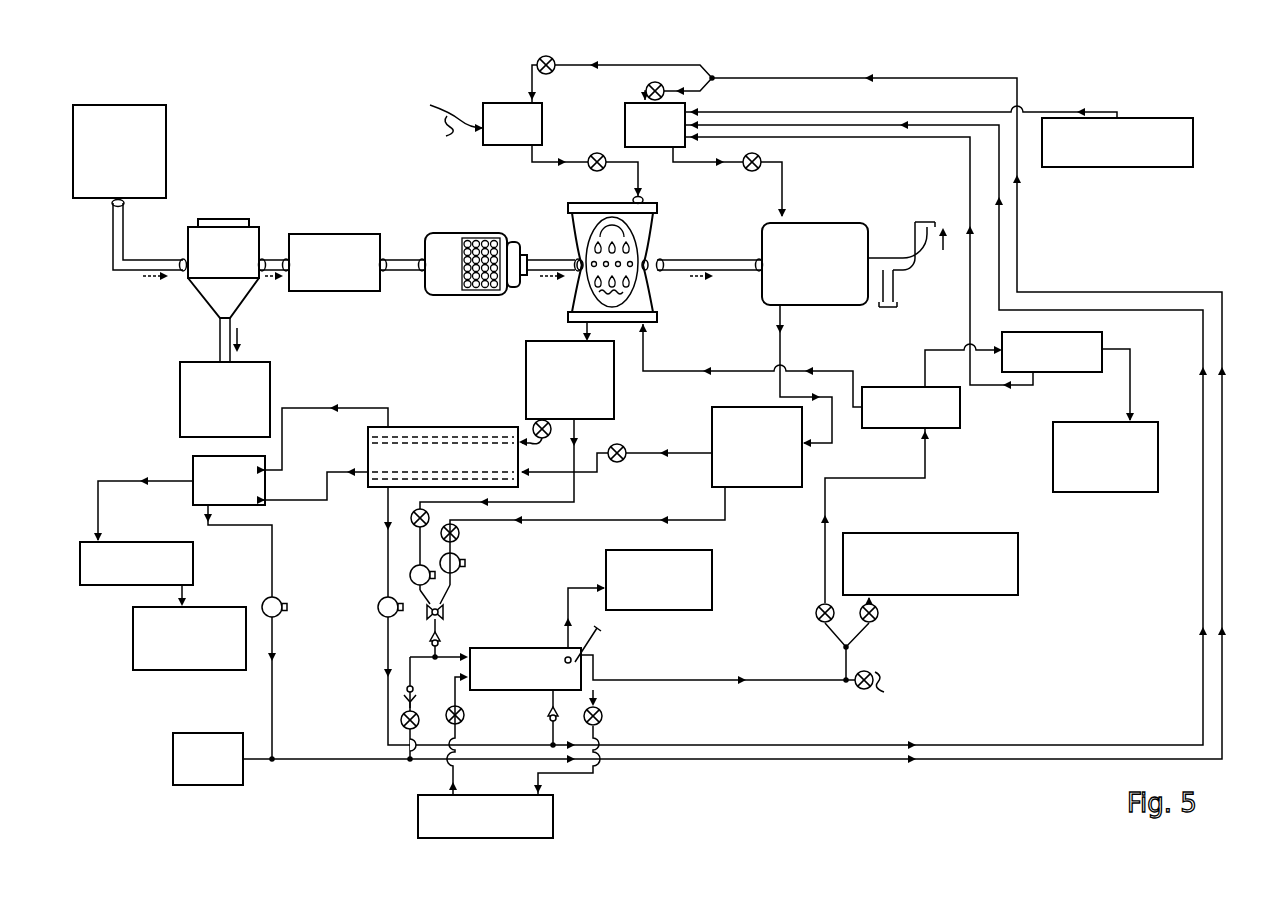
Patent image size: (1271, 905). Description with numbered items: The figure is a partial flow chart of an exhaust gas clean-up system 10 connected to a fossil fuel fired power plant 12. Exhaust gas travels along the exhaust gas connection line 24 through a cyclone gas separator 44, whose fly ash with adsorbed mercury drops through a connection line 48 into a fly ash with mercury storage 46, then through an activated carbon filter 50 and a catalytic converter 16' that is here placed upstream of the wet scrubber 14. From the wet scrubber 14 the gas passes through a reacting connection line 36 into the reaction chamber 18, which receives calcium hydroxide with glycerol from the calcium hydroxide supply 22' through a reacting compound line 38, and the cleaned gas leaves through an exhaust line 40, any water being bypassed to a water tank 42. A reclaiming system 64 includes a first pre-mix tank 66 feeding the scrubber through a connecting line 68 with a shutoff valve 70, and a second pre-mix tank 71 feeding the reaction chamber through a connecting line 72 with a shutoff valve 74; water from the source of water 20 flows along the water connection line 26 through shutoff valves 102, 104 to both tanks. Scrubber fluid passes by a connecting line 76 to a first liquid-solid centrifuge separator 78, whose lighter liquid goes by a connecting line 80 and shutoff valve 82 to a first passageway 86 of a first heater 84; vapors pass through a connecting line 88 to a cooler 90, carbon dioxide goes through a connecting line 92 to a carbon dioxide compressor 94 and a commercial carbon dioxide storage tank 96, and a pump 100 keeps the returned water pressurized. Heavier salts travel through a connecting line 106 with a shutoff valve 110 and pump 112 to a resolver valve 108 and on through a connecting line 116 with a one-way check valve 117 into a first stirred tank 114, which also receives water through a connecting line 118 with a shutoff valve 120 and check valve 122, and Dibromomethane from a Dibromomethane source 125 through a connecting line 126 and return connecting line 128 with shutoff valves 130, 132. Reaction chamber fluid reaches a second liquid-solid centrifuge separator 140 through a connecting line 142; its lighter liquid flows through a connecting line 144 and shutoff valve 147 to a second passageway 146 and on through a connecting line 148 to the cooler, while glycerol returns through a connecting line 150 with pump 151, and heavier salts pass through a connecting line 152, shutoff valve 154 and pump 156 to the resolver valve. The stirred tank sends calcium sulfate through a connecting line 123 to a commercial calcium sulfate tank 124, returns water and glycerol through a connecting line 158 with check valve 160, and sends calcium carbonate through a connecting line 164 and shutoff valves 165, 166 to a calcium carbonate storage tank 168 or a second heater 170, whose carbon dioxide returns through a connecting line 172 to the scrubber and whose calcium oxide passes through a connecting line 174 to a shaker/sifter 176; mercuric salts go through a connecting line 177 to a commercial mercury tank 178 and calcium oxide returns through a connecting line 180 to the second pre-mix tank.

The exhaust gas clean-up system 10 is at (305, 74).
The fossil fuel fired power plant 12 is at (158, 103).
The wet scrubber 14 is at (585, 203).
The catalytic converter 16' is at (476, 237).
The reaction chamber 18 is at (818, 223).
The source of water 20 is at (213, 733).
The calcium hydroxide supply 22' is at (1117, 156).
The exhaust gas connection line 24 is at (165, 258).
The water connection line 26 is at (750, 78).
The reacting connection line 36 is at (714, 258).
The reacting compound line 38 is at (822, 112).
The exhaust line 40 is at (916, 242).
The water tank 42 is at (897, 285).
The cyclone gas separator 44 is at (238, 219).
The fly ash with mercury storage 46 is at (180, 392).
The connection line 48 is at (220, 342).
The activated carbon filter 50 is at (330, 291).
The reclaiming system 64 is at (358, 133).
The first pre-mix tank 66 is at (485, 103).
The connecting line 68 is at (532, 158).
The remotely controlled shutoff valve 70 is at (592, 153).
The second pre-mix tank 71 is at (625, 112).
The connecting line 72 is at (700, 164).
The remotely controlled shutoff valve 74 is at (746, 170).
The connecting line 76 is at (580, 332).
The first liquid-solid centrifuge separator 78 is at (526, 370).
The connecting line 80 is at (535, 440).
The remotely controlled shutoff valve 82 is at (536, 422).
The first heater 84 is at (485, 427).
The first passageway 86 is at (455, 437).
The connecting line 88 is at (380, 408).
The cooler 90 is at (193, 462).
The connecting line 92 is at (98, 495).
The carbon dioxide compressor 94 is at (133, 542).
The commercial carbon dioxide storage tank 96 is at (272, 542).
The remotely controlled pump 100 is at (262, 600).
The remotely controlled shutoff valve 102 is at (540, 58).
The remotely controlled shutoff valve 104 is at (657, 82).
The connecting line 106 is at (578, 492).
The resolver valve 108 is at (448, 608).
The remotely controlled shutoff valve 110 is at (414, 526).
The remotely controlled pump 112 is at (410, 582).
The first stirred tank 114 is at (538, 690).
The connecting line 116 is at (442, 656).
The one-way check valve 117 is at (430, 628).
The connecting line 118 is at (410, 658).
The remotely controlled shutoff valve 120 is at (402, 726).
The one-way check valve 122 is at (404, 700).
The connecting line 123 is at (568, 598).
The commercial calcium sulfate tank 124 is at (606, 568).
The Dibromomethane source 125 is at (553, 814).
The connecting line 126 is at (446, 787).
The return connecting line 128 is at (580, 778).
The remotely controlled shutoff valve 130 is at (466, 720).
The remotely controlled shutoff valve 132 is at (604, 718).
The second liquid-solid centrifuge separator 140 is at (712, 416).
The connecting line 142 is at (780, 345).
The connecting line 144 is at (626, 452).
The second passageway 146 is at (372, 464).
The remotely controlled shutoff valve 147 is at (624, 462).
The connecting line 148 is at (327, 494).
The connecting line 150 is at (388, 508).
The remotely controlled pump 151 is at (378, 607).
The connecting line 152 is at (530, 520).
The remotely controlled shutoff valve 154 is at (458, 540).
The remotely controlled pump 156 is at (460, 572).
The connecting line 158 is at (560, 702).
The one-way check valve 160 is at (560, 730).
The connecting line 164 is at (876, 672).
The remotely controlled shutoff valve 165 is at (860, 689).
The remotely controlled shutoff valve 166 is at (816, 614).
The calcium carbonate storage tank 168 is at (1018, 540).
The second heater 170 is at (936, 428).
The connecting line 172 is at (726, 371).
The connecting line 174 is at (925, 350).
The shaker/sifter 176 is at (1085, 332).
The connecting line 177 is at (1130, 398).
The commercial mercury tank 178 is at (1053, 435).
The connecting line 180 is at (970, 182).